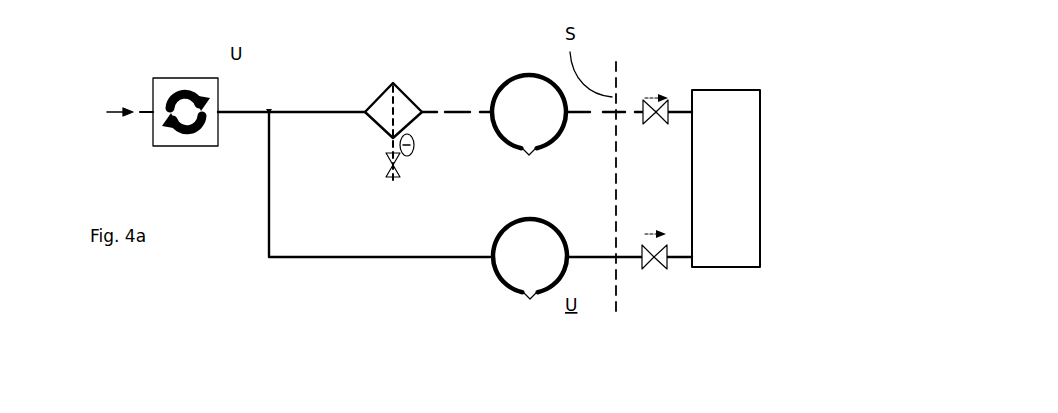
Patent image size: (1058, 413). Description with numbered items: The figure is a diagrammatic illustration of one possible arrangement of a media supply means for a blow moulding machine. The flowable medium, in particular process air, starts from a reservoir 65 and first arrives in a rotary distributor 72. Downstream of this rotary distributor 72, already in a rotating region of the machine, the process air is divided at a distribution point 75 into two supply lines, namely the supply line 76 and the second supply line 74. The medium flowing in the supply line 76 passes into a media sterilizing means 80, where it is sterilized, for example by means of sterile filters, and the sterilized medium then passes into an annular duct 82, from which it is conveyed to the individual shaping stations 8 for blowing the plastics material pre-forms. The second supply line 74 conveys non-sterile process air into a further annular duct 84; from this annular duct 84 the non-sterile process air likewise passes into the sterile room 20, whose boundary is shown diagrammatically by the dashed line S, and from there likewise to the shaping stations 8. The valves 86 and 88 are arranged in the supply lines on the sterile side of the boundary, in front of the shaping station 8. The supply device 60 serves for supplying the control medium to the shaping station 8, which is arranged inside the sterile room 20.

The reservoir 65 is at (111, 112).
The rotary distributor 72 is at (196, 137).
The supply line 76 is at (337, 108).
The distribution point 75 is at (271, 114).
The second supply line 74 is at (269, 172).
The media sterilizing means 80 is at (383, 100).
The annular duct 82 is at (515, 113).
The further annular duct 84 is at (515, 250).
The valve 86 is at (647, 116).
The valve 88 is at (649, 243).
The supply device 60 is at (632, 258).
The shaping station 8 is at (736, 150).
The sterile room 20 is at (682, 44).